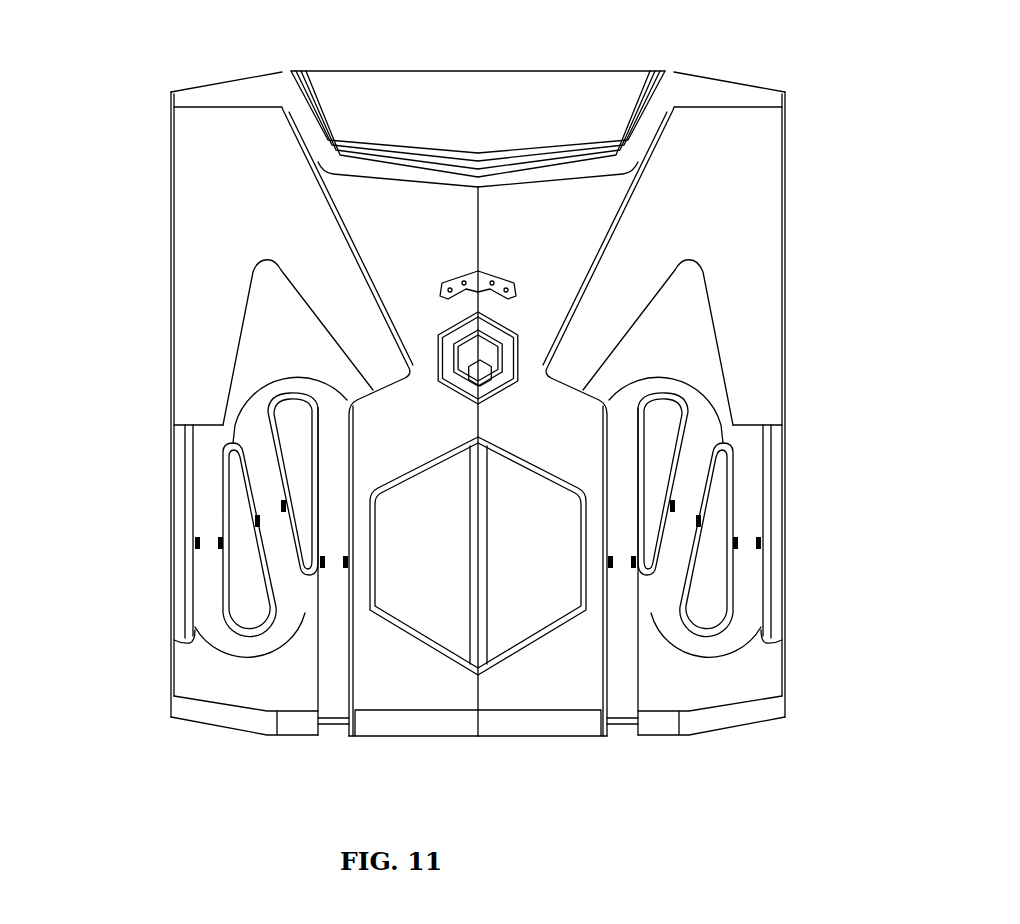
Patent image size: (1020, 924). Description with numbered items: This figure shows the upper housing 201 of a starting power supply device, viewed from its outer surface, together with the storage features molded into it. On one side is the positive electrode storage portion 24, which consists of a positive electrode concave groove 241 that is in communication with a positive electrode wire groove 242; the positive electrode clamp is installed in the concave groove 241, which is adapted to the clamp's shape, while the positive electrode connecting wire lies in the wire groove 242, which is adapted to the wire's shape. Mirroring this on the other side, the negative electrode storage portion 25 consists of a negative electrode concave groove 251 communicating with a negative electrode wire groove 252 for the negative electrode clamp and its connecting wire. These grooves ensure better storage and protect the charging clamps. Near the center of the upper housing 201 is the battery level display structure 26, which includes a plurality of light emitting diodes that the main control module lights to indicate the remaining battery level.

The upper housing 201 is at (713, 140).
The battery level display structure 26 is at (513, 282).
The positive electrode concave groove 241 is at (245, 200).
The negative electrode concave groove 251 is at (690, 325).
The positive electrode storage portion 24 is at (188, 591).
The negative electrode storage portion 25 is at (749, 556).
The positive electrode wire groove 242 is at (279, 612).
The negative electrode wire groove 252 is at (700, 608).